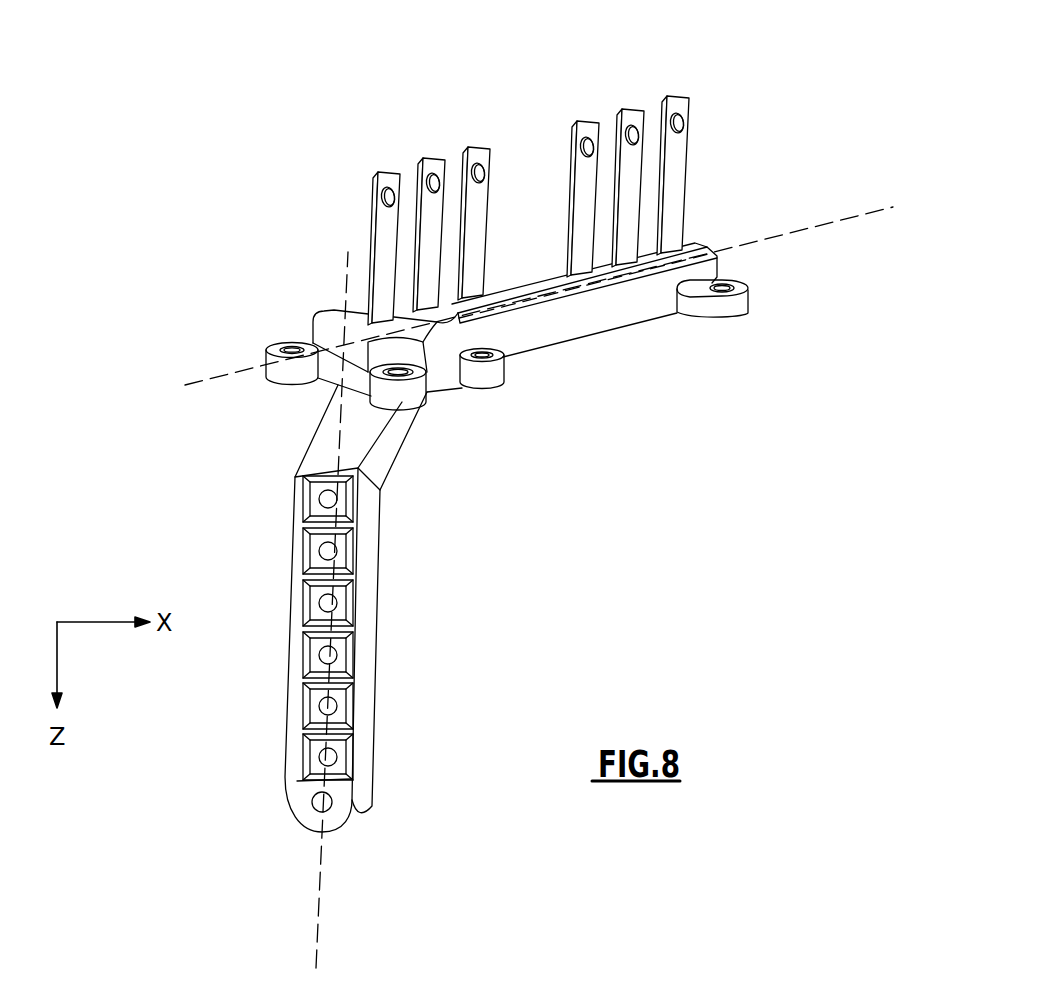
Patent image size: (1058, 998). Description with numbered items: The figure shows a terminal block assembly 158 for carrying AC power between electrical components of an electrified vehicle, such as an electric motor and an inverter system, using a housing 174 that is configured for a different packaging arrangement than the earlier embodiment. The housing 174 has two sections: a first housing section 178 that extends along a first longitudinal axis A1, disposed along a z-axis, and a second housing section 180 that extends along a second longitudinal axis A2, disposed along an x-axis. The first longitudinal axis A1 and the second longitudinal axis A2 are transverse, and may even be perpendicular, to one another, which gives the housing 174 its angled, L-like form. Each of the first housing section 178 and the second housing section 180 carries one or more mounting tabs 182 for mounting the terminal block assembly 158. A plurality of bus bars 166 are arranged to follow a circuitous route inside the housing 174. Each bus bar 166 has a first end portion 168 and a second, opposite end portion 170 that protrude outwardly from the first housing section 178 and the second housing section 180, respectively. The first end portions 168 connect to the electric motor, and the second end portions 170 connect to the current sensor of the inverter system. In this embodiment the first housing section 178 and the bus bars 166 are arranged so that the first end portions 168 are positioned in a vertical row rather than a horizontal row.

The terminal block assembly 158 is at (547, 88).
The bus bars 166 is at (571, 177).
The second end portion 170 is at (681, 80).
The housing 174 is at (572, 341).
The second housing section 180 is at (648, 303).
The mounting tabs 182 is at (278, 376).
The first housing section 178 is at (314, 608).
The first end portion 168 is at (291, 768).
The first longitudinal axis A1 is at (322, 933).
The second longitudinal axis A2 is at (846, 222).